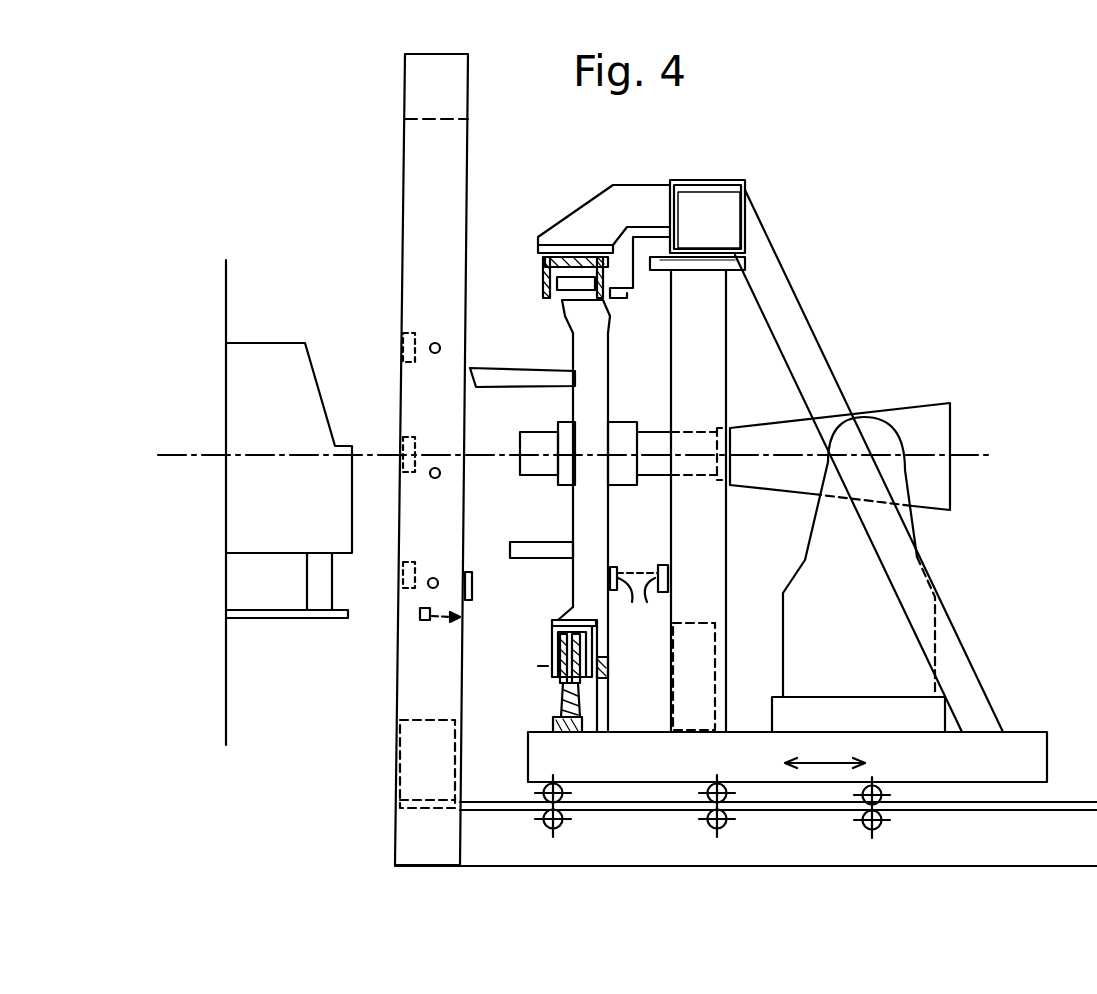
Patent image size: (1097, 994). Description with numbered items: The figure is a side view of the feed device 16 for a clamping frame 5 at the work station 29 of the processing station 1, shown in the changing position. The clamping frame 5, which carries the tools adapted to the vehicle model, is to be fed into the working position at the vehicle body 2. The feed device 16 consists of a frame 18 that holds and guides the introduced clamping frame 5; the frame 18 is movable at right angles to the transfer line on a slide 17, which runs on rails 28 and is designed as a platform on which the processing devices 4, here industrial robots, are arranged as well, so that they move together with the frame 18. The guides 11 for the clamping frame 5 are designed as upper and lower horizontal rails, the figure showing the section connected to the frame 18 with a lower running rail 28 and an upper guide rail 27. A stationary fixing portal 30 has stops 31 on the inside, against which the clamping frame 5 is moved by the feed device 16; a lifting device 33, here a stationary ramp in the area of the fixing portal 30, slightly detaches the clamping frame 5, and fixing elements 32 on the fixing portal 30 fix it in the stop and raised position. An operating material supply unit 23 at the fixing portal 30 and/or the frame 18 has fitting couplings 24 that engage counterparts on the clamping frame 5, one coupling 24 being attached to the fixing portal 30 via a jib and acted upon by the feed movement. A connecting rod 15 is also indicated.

The processing station 1 is at (290, 178).
The vehicle body 2 is at (240, 509).
The processing device 4 is at (935, 435).
The clamping frame 5 is at (590, 560).
The guide 11 is at (522, 266).
The connecting rod 15 is at (580, 312).
The feed device 16 is at (968, 544).
The slide 17 is at (735, 752).
The frame 18 is at (707, 568).
The operating material supply unit 23 is at (415, 762).
The fitting coupling 24 is at (473, 590).
The upper guide rail 27 is at (565, 253).
The lower running rail 28 is at (567, 732).
The work station 29 is at (305, 727).
The fixing portal 30 is at (425, 88).
The stop 31 is at (403, 346).
The fixing element 32 is at (435, 343).
The lifting device 33 is at (426, 620).